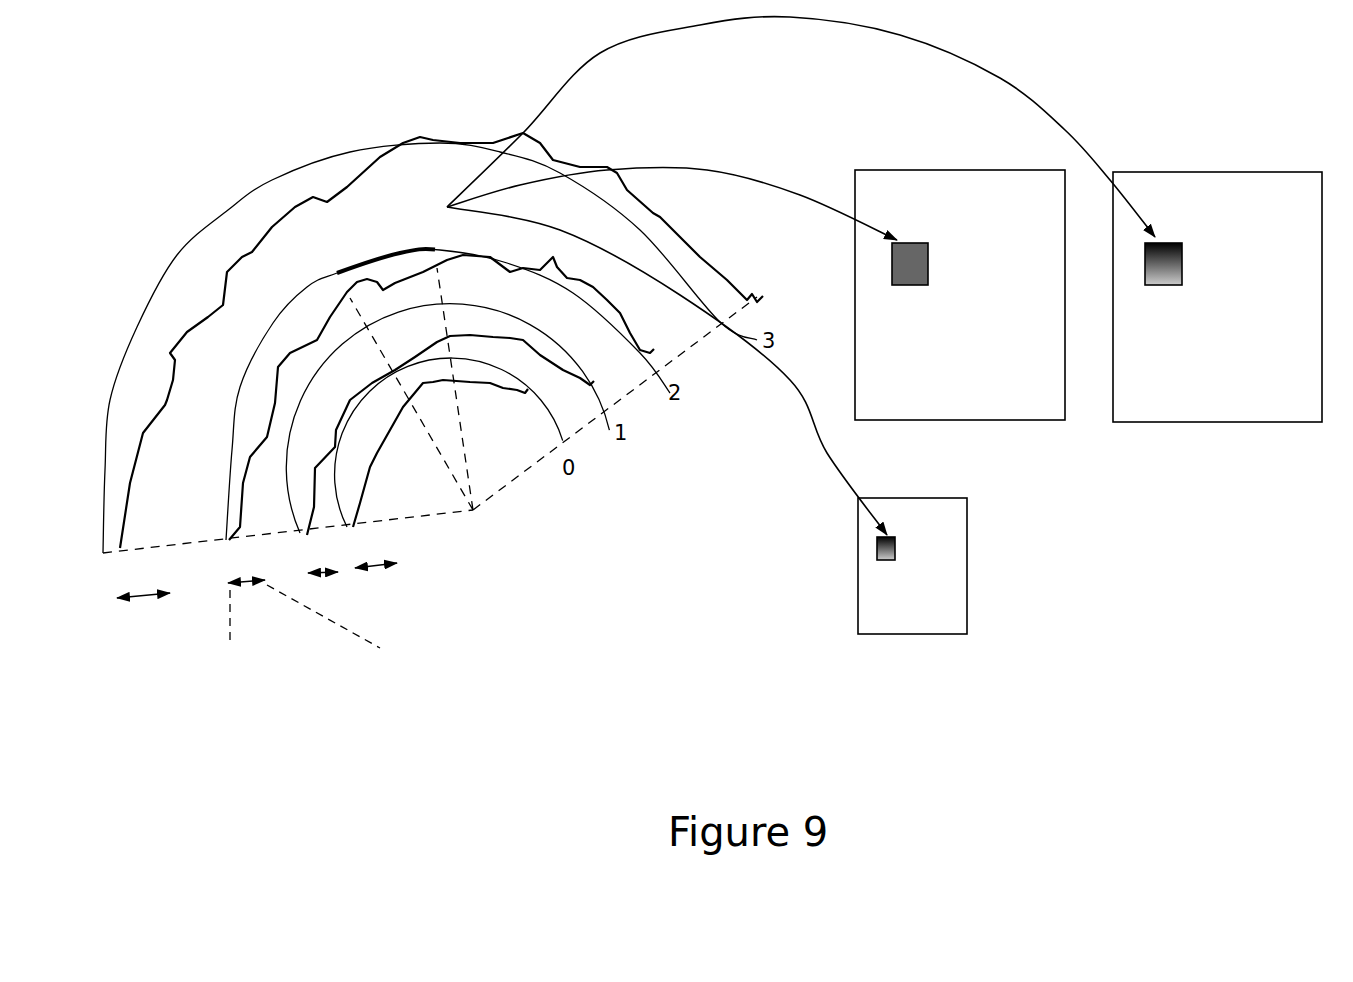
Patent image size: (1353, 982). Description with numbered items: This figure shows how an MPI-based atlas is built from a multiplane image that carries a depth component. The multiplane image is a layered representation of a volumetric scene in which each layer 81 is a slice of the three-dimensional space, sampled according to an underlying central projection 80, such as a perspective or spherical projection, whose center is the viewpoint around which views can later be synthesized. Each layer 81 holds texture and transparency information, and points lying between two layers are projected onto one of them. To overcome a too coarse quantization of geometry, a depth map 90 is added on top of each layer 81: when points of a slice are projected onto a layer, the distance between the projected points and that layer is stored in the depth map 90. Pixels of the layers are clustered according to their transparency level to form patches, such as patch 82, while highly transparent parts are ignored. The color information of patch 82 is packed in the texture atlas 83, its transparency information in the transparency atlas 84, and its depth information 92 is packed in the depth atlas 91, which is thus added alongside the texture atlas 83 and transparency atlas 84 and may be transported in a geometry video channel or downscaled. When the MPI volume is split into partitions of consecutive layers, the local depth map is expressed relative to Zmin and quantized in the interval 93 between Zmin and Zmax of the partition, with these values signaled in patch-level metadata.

The central projection 80 is at (473, 512).
The layer 81 is at (177, 255).
The patch 82 is at (350, 268).
The texture atlas 83 is at (872, 170).
The transparency atlas 84 is at (1223, 170).
The depth map 90 is at (167, 400).
The depth atlas 91 is at (968, 523).
The depth information 92 is at (383, 290).
The interval 93 is at (230, 590).